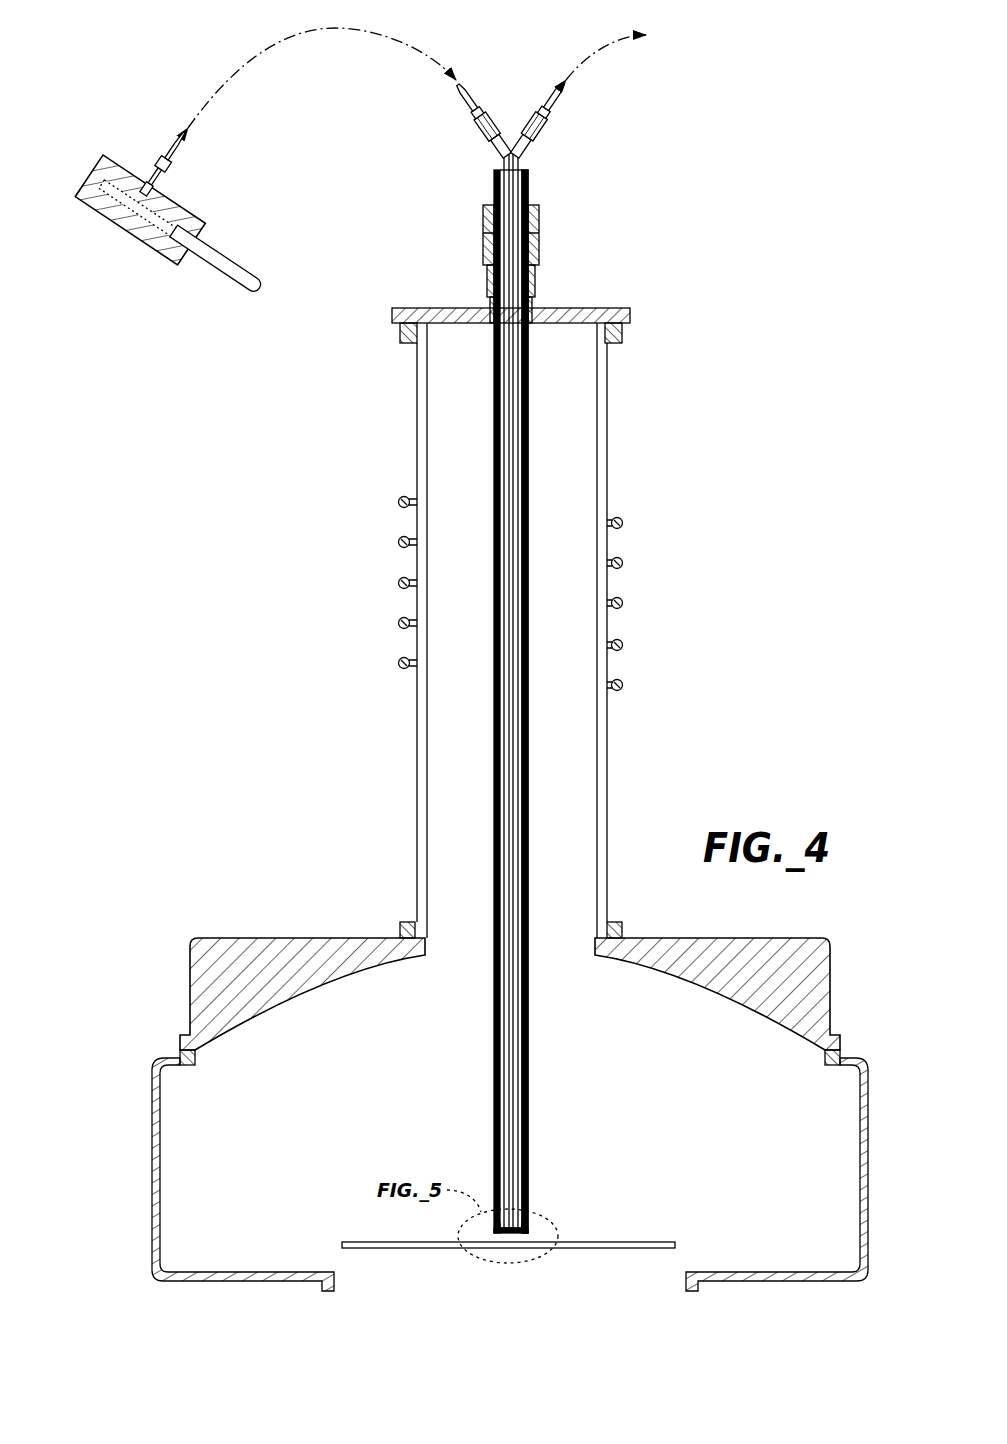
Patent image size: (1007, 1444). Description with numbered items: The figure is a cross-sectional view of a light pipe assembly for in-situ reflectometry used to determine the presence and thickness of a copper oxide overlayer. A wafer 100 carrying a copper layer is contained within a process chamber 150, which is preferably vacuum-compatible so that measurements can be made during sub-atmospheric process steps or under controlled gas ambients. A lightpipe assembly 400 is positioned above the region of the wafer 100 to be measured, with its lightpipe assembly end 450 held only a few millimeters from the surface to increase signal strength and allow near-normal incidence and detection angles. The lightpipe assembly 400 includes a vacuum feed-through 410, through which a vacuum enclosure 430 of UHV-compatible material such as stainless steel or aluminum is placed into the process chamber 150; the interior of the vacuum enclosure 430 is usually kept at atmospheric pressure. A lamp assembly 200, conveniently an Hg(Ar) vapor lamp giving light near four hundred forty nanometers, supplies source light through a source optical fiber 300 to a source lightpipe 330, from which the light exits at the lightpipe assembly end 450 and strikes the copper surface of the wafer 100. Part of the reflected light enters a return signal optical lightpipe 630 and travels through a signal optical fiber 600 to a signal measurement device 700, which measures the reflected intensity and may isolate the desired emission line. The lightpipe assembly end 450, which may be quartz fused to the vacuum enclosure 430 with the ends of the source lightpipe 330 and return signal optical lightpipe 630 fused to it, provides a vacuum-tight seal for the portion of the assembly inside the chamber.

The wafer 100 is at (649, 1240).
The process chamber 150 is at (179, 1049).
The lamp assembly 200 is at (172, 190).
The source optical fiber 300 is at (220, 62).
The source lightpipe 330 is at (503, 497).
The lightpipe assembly 400 is at (492, 438).
The vacuum feed-through 410 is at (543, 226).
The vacuum enclosure 430 is at (527, 423).
The lightpipe assembly end 450 is at (530, 1230).
The signal optical fiber 600 is at (510, 88).
The return signal optical lightpipe 630 is at (517, 525).
The signal measurement device 700 is at (647, 35).